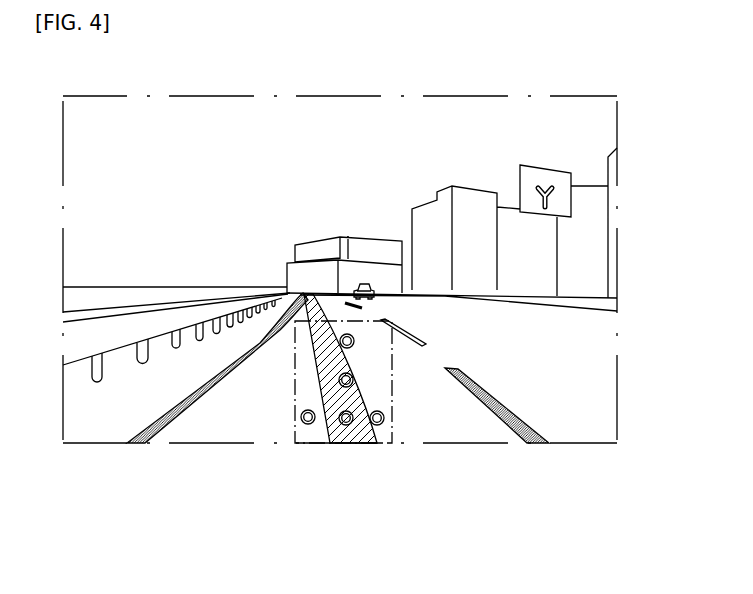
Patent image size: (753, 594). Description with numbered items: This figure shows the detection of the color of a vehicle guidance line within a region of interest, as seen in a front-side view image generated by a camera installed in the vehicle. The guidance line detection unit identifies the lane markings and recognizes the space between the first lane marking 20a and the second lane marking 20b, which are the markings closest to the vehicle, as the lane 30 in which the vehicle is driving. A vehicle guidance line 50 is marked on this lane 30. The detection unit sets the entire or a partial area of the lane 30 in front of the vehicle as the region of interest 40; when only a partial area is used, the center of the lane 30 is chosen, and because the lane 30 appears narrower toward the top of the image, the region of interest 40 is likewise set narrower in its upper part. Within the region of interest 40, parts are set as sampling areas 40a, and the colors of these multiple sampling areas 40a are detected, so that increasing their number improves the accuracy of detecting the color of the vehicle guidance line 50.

The first lane marking 20a is at (153, 437).
The second lane marking 20b is at (537, 428).
The lane 30 is at (453, 425).
The region of interest 40 is at (392, 361).
The sampling area 40a is at (383, 424).
The vehicle guidance line 50 is at (348, 443).